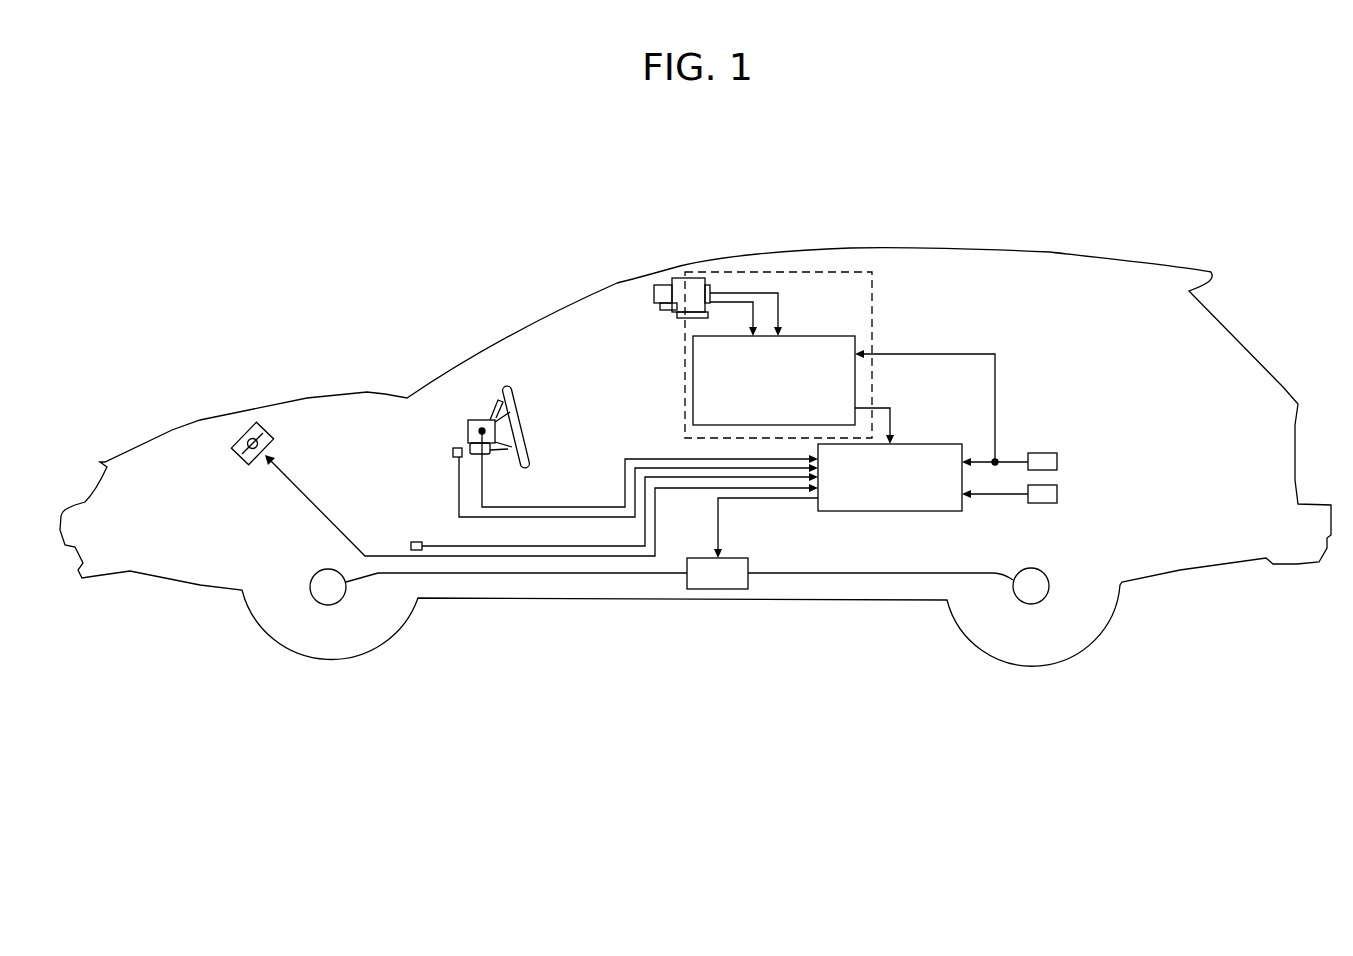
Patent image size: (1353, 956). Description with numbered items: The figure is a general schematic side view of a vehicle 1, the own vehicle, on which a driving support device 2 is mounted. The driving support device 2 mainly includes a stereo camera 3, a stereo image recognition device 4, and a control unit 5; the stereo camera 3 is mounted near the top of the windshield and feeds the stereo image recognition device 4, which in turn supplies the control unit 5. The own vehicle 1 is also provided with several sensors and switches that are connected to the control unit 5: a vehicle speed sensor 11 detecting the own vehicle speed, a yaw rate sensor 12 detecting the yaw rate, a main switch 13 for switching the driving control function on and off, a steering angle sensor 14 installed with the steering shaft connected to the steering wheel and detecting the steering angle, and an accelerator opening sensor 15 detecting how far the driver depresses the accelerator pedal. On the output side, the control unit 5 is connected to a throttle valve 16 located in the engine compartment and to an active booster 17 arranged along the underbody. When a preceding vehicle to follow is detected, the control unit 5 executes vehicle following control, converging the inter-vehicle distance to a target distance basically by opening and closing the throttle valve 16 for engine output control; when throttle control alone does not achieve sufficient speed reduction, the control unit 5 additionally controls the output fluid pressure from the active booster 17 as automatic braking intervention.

The vehicle 1 is at (1018, 216).
The driving support device 2 is at (1020, 329).
The stereo camera 3 is at (655, 324).
The stereo image recognition device 4 is at (813, 336).
The control unit 5 is at (926, 444).
The vehicle speed sensor 11 is at (1058, 462).
The yaw rate sensor 12 is at (1058, 494).
The main switch 13 is at (489, 452).
The steering angle sensor 14 is at (457, 448).
The accelerator opening sensor 15 is at (415, 542).
The throttle valve 16 is at (242, 456).
The active booster 17 is at (735, 557).